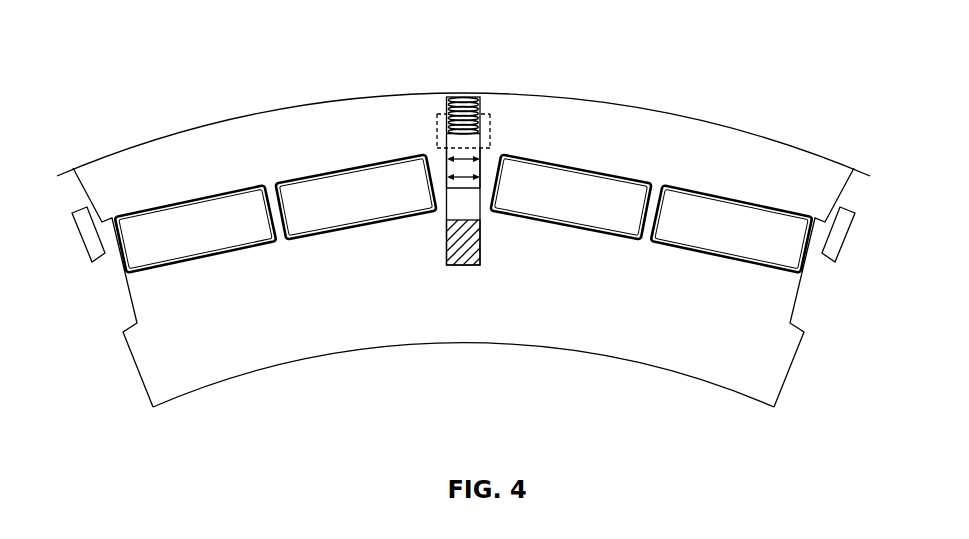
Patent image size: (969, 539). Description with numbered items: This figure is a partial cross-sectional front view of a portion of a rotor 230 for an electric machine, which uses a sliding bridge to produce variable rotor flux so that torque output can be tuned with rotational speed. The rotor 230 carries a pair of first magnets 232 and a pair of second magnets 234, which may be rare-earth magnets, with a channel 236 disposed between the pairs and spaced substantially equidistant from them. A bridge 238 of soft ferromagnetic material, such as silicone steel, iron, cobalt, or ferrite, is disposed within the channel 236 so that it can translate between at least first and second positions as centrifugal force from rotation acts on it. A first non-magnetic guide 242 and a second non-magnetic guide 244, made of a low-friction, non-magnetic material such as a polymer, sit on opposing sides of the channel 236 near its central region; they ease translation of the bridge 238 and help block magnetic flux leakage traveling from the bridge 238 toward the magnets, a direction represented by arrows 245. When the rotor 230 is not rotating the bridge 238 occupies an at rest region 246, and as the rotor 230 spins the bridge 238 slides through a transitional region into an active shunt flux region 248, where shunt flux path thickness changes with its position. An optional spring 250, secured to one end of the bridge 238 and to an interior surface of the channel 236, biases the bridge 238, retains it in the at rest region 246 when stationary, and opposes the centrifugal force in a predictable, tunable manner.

The rotor 230 is at (593, 100).
The pair of first magnets 232 is at (207, 261).
The pair of second magnets 234 is at (560, 229).
The channel 236 is at (468, 97).
The bridge 238 is at (480, 135).
The first non-magnetic guide 242 is at (446, 163).
The second non-magnetic guide 244 is at (481, 165).
The arrows 245 is at (471, 168).
The at rest region 246 is at (485, 242).
The active shunt flux region 248 is at (436, 116).
The spring 250 is at (466, 97).